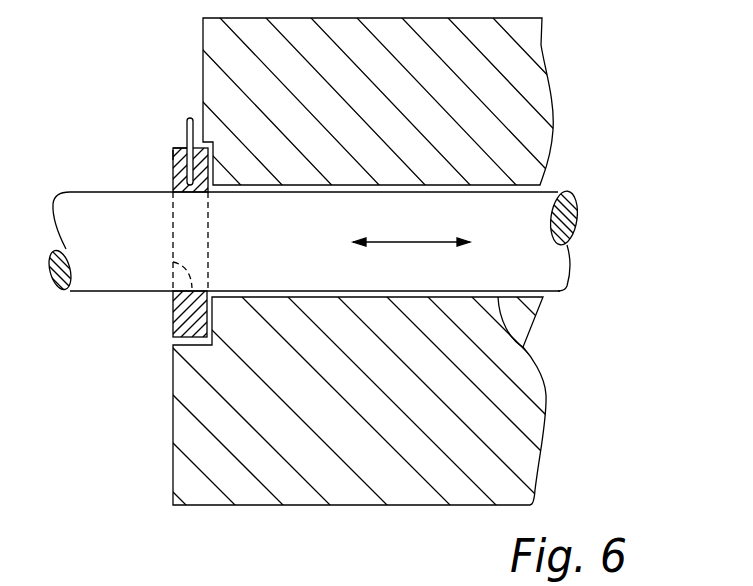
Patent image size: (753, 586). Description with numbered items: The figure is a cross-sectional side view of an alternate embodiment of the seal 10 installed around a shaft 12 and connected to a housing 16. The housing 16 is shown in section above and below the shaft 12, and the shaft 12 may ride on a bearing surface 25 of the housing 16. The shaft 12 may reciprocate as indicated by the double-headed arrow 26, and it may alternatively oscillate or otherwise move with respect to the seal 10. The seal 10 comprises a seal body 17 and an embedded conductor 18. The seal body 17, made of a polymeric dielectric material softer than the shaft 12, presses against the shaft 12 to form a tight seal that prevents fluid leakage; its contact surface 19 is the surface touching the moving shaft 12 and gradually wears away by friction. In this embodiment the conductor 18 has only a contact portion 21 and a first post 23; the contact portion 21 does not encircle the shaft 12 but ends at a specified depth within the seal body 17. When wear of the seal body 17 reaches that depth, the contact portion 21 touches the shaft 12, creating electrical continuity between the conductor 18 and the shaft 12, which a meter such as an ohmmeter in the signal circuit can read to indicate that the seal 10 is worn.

The seal 10 is at (146, 330).
The shaft 12 is at (528, 222).
The housing 16 is at (349, 490).
The seal body 17 is at (173, 175).
The embedded conductor 18 is at (173, 150).
The contact surface 19 is at (173, 262).
The contact portion 21 is at (173, 213).
The first post 23 is at (188, 118).
The bearing surface 25 is at (526, 331).
The arrow 26 is at (400, 242).